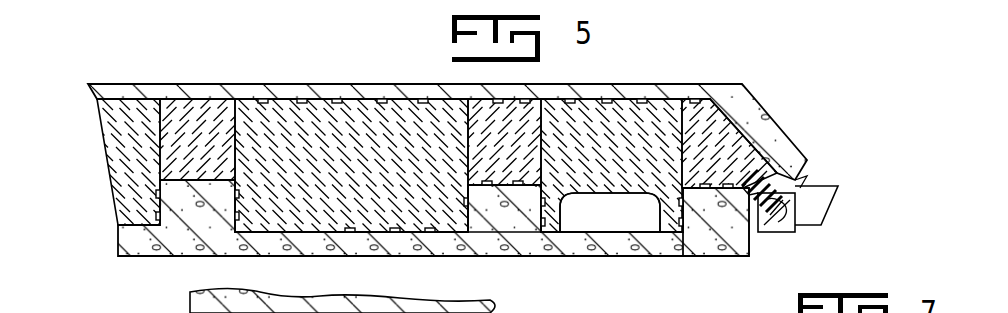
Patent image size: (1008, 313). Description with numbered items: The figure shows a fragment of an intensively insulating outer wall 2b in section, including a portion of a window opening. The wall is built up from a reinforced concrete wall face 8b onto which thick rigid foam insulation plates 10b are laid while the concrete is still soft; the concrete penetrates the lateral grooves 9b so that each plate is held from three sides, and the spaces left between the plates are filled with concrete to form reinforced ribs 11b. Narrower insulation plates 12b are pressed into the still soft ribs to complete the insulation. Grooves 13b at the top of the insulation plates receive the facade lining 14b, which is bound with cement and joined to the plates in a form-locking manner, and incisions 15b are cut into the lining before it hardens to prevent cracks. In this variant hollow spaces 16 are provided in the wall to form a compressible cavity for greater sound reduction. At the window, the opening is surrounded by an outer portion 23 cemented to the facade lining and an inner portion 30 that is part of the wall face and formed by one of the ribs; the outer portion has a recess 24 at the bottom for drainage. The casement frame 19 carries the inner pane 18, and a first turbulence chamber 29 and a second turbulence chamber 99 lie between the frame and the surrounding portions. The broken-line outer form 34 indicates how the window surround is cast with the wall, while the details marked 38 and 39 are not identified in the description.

The outer wall 2b is at (100, 127).
The wall face 8b is at (590, 248).
The grooves 9b is at (305, 218).
The insulation plates 10b is at (283, 137).
The ribs 11b is at (510, 217).
The insulation plates 12b is at (531, 113).
The grooves 13b is at (336, 95).
The facade lining 14b is at (347, 97).
The incisions 15b is at (467, 97).
The hollow spaces 16 is at (582, 220).
The inner pane 18 is at (823, 220).
The frame 19 is at (783, 238).
The outer portion 23 is at (757, 120).
The recess 24 is at (787, 147).
The first turbulence chamber 29 is at (398, 306).
The inner portion 30 is at (732, 260).
The outer form 34 is at (807, 167).
The corner joint 38 is at (750, 238).
The bottom joint 39 is at (686, 252).
The second turbulence chamber 99 is at (325, 286).